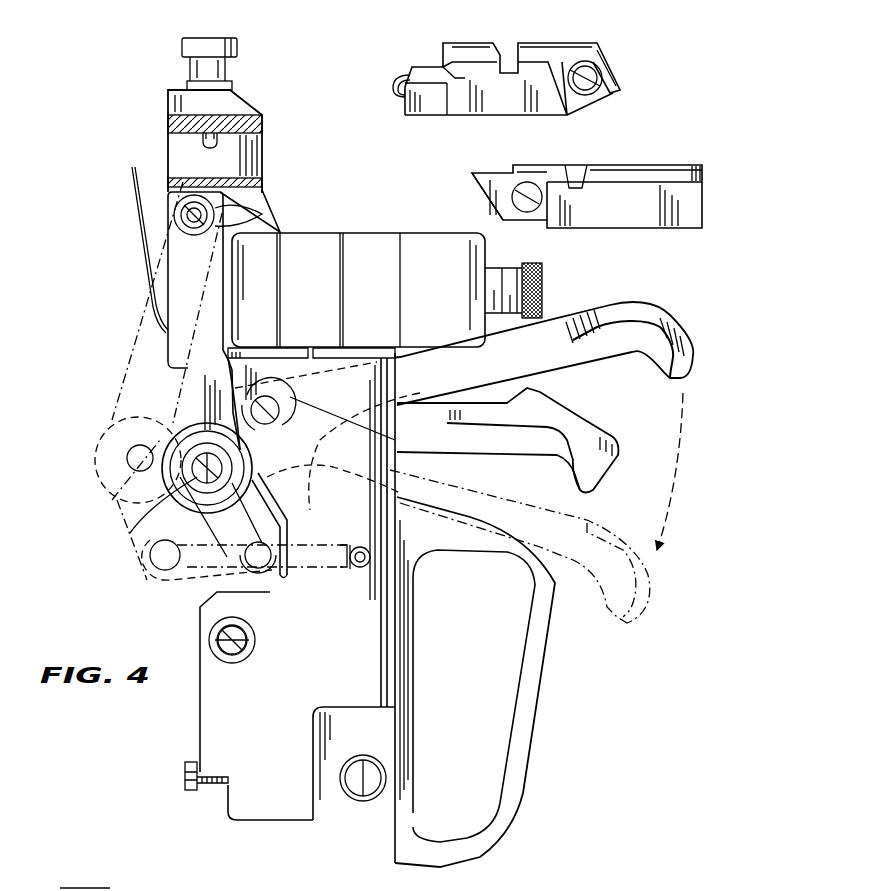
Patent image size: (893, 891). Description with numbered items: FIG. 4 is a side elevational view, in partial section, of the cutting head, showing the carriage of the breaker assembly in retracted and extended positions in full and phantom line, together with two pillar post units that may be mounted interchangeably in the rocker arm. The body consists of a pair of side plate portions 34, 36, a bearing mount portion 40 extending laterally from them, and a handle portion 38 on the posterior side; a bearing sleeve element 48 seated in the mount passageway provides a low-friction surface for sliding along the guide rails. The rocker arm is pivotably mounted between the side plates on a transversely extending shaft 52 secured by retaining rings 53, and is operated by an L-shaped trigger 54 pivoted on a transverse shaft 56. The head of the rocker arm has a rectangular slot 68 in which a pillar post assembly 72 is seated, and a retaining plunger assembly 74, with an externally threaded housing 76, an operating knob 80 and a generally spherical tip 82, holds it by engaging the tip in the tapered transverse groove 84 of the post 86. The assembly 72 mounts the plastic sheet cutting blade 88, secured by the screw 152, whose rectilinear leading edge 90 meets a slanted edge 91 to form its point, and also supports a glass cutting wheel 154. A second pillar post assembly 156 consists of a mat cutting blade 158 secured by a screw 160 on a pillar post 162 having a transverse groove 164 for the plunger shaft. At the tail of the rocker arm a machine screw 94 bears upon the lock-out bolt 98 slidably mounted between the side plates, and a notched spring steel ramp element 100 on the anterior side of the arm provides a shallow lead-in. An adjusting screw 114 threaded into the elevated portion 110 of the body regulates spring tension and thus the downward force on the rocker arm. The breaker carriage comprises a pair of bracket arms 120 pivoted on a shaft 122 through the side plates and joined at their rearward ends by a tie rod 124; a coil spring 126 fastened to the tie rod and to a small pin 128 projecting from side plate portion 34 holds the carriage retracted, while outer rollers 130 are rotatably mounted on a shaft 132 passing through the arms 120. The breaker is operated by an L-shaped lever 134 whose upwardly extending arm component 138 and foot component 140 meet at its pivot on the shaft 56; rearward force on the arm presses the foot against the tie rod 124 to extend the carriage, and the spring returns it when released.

The side plate portion 34 is at (104, 890).
The side plate portion 36 is at (222, 722).
The handle portion 38 is at (515, 785).
The bearing mount portion 40 is at (365, 258).
The bearing sleeve element 48 is at (310, 344).
The transversely extending shaft 52 is at (226, 660).
The retaining rings 53 is at (212, 208).
The L-shaped trigger 54 is at (628, 460).
The transverse shaft 56 is at (287, 398).
The rectangular slot 68 is at (170, 135).
The pillar post assembly 72 is at (458, 32).
The retaining plunger assembly 74 is at (228, 26).
The externally threaded housing 76 is at (232, 86).
The operating knob 80 is at (182, 43).
The generally spherical tip 82 is at (212, 148).
The tapered transverse groove 84 is at (500, 44).
The post 86 is at (422, 70).
The blade 88 is at (596, 44).
The rectilinear leading edge 90 is at (608, 98).
The slanted edge 91 is at (618, 72).
The machine screw 94 is at (184, 782).
The lock-out bolt 98 is at (352, 800).
The notched spring steel ramp element 100 is at (133, 178).
The elevated portion 110 is at (430, 262).
The adjusting screw 114 is at (545, 285).
The bracket arms 120 is at (190, 280).
The shaft 122 is at (216, 222).
The tie rod 124 is at (287, 590).
The coil spring 126 is at (345, 545).
The small pin 128 is at (358, 570).
The outer rollers 130 is at (172, 425).
The shaft 132 is at (150, 515).
The L-shaped lever 134 is at (705, 348).
The arm component 138 is at (587, 343).
The foot component 140 is at (180, 578).
The screw 152 is at (594, 92).
The glass cutting wheel 154 is at (270, 152).
The second pillar post assembly 156 is at (288, 157).
The mat cutting blade 158 is at (494, 175).
The screw 160 is at (527, 182).
The pillar post 162 is at (640, 212).
The transverse groove 164 is at (585, 165).